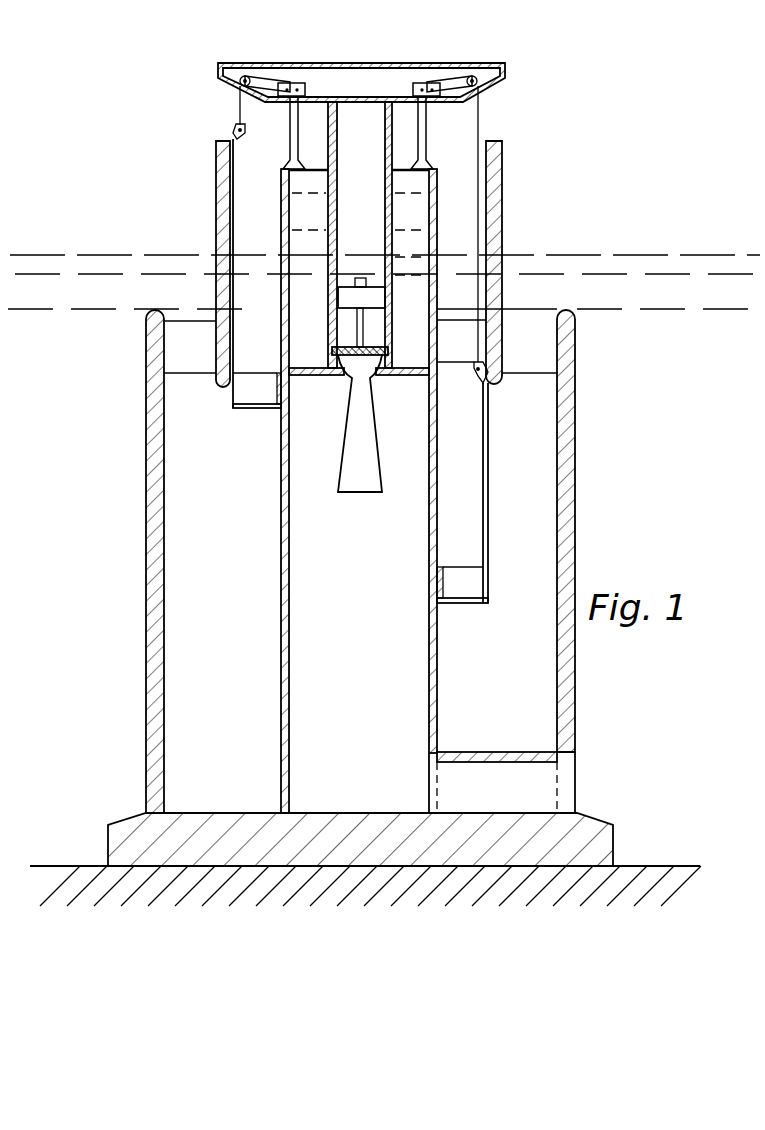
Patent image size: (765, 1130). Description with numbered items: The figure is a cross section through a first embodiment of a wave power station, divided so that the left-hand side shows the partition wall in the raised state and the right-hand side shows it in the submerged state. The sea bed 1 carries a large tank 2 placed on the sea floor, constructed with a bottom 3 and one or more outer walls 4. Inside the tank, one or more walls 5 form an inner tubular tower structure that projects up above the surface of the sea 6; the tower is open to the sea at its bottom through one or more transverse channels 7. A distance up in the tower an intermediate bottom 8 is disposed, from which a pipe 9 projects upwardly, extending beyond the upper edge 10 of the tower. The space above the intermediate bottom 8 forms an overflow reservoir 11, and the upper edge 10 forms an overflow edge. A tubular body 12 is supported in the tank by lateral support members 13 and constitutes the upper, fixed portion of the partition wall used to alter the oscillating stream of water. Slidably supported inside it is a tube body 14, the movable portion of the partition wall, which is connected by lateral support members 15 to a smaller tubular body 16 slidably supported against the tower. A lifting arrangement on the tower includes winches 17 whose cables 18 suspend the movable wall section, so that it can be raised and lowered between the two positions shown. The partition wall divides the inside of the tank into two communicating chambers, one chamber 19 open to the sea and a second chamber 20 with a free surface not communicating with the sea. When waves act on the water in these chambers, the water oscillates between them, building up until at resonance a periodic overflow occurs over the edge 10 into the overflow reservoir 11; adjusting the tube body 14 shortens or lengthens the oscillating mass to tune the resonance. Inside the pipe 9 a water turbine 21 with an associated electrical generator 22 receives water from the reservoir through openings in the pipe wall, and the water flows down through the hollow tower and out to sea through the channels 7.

The sea bed 1 is at (645, 866).
The tank 2 is at (577, 545).
The bottom 3 is at (363, 815).
The walls 4 is at (157, 533).
The walls forming inner tubular tower structure 5 is at (283, 655).
The surface of the sea 6 is at (683, 252).
The transverse channels 7 is at (540, 780).
The intermediate bottom 8 is at (310, 378).
The pipe 9 is at (388, 256).
The upper edge 10 is at (438, 170).
The overflow reservoir 11 is at (417, 200).
The tubular body 12 is at (222, 202).
The lateral support members 13 is at (180, 358).
The tube body 14 is at (232, 231).
The lateral support members 15 is at (245, 398).
The smaller tubular body 16 is at (274, 398).
The winches 17 is at (292, 80).
The cables 18 is at (266, 77).
The chamber 19 is at (525, 470).
The chamber 20 is at (467, 438).
The water turbine 21 is at (392, 333).
The electrical generator 22 is at (375, 299).